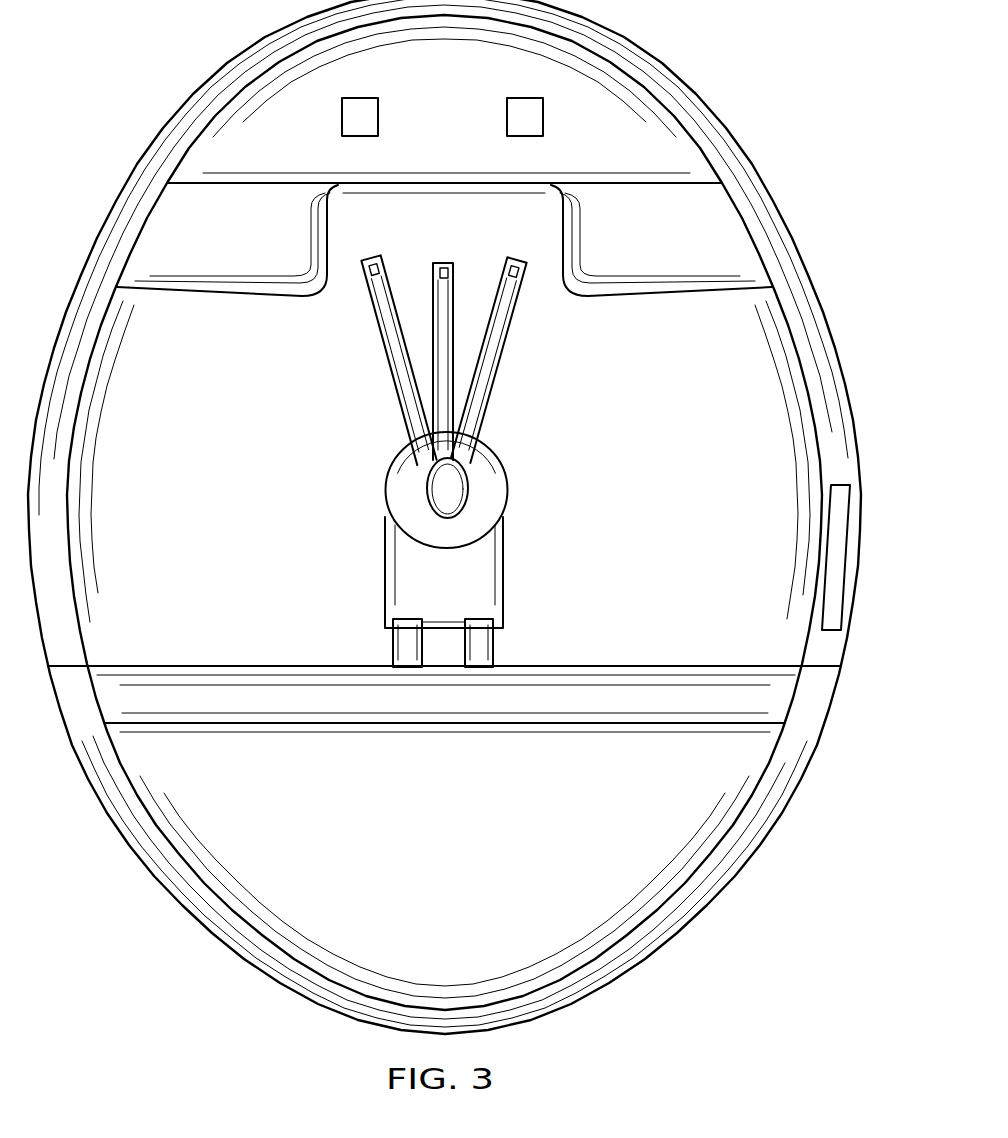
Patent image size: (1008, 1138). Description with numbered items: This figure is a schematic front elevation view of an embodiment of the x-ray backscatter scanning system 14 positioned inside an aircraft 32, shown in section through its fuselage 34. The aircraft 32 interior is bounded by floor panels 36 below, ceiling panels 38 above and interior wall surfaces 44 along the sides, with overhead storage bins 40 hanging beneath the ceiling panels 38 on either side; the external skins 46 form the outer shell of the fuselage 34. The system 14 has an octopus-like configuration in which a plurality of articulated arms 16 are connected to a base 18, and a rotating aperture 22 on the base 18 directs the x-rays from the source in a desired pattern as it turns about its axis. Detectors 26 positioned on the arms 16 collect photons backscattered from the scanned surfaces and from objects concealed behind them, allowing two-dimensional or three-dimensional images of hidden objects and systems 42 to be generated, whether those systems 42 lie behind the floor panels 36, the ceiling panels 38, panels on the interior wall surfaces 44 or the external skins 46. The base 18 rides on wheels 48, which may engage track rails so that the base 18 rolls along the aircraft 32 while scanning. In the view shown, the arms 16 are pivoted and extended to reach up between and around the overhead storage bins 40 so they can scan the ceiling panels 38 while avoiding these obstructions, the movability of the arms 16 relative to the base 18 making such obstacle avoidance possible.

The x-ray backscatter scanning system 14 is at (414, 441).
The articulated arms 16 is at (400, 362).
The base 18 is at (423, 596).
The rotating aperture 22 is at (497, 496).
The detectors 26 is at (373, 262).
The aircraft 32 is at (457, 884).
The fuselage 34 is at (97, 777).
The floor panels 36 is at (731, 665).
The ceiling panels 38 is at (688, 182).
The overhead storage bins 40 is at (203, 256).
The hidden objects and systems 42 is at (378, 117).
The interior wall surfaces 44 is at (76, 428).
The external skins 46 is at (825, 312).
The wheels 48 is at (398, 648).